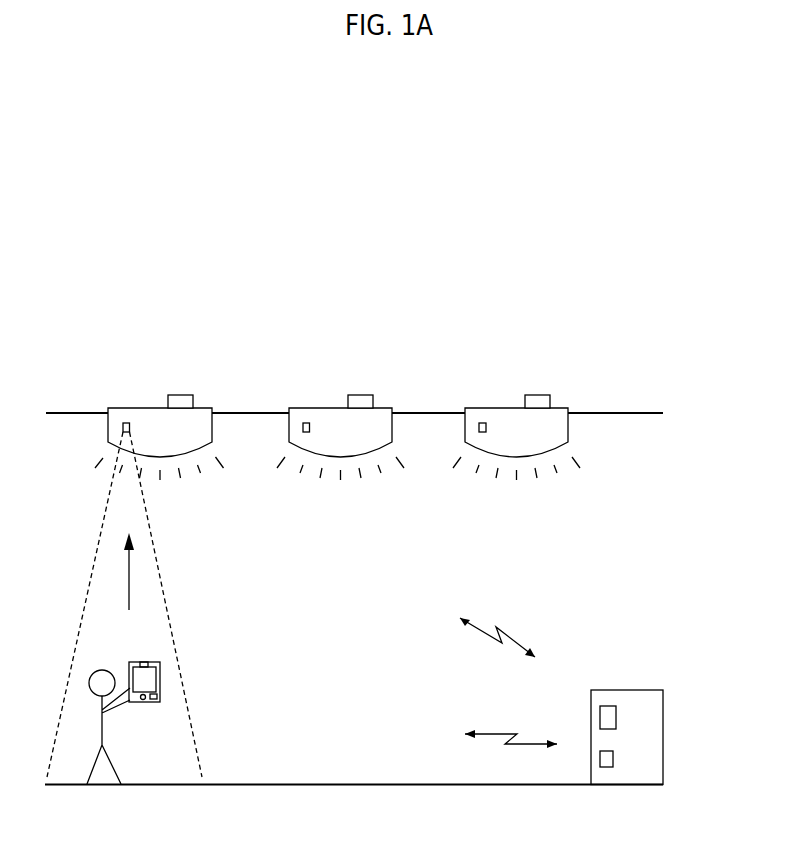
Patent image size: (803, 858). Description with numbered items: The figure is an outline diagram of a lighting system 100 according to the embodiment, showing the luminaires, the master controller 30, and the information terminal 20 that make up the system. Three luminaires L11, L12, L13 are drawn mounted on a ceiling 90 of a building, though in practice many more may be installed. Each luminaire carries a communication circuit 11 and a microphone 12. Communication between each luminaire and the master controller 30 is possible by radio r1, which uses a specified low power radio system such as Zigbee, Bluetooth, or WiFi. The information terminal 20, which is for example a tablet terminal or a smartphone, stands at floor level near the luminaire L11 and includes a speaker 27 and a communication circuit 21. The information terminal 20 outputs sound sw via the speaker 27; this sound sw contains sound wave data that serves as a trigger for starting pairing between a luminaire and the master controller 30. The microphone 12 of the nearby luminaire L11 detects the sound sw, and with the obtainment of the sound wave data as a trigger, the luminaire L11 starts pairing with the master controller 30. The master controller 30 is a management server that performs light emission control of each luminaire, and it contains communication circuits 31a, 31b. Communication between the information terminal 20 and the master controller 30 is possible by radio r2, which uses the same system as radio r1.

The lighting system 100 is at (617, 370).
The ceiling 90 is at (627, 416).
The luminaire L11 is at (126, 404).
The luminaire L12 is at (306, 404).
The luminaire L13 is at (482, 404).
The communication circuit 11 is at (184, 395).
The microphone 12 is at (122, 427).
The information terminal 20 is at (122, 660).
The speaker 27 is at (145, 662).
The communication circuit 21 is at (158, 697).
The master controller 30 is at (624, 687).
The communication circuit 31a is at (616, 717).
The communication circuit 31b is at (613, 759).
The sound sw is at (117, 571).
The radio r1 is at (497, 631).
The radio r2 is at (511, 750).